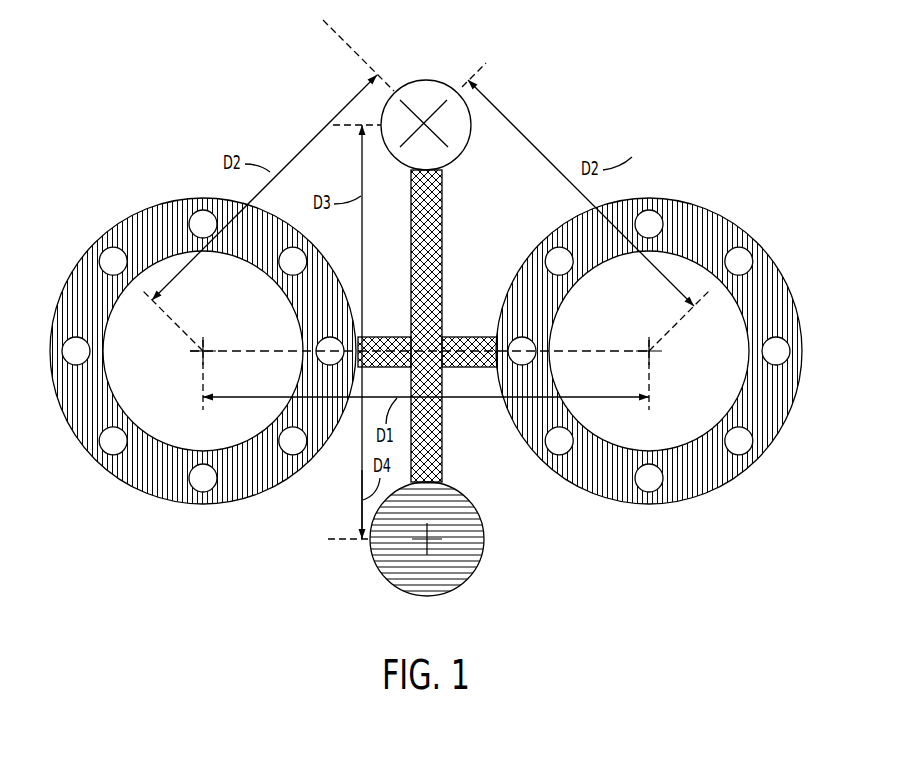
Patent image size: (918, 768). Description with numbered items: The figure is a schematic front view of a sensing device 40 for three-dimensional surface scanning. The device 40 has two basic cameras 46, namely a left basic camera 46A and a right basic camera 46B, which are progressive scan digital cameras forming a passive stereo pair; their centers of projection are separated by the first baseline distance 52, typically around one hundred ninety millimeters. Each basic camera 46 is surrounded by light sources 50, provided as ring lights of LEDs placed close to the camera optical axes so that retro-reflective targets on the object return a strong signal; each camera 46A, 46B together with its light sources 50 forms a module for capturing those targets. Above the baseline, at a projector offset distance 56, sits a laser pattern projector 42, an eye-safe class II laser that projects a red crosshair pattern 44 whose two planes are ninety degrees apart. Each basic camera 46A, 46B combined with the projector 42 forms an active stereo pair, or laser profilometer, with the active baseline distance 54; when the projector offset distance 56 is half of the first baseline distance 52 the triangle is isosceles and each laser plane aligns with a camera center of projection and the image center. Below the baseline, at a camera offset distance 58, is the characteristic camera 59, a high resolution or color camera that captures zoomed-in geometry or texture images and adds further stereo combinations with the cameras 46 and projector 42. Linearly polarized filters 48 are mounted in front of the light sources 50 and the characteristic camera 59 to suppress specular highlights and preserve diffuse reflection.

The sensing device 40 is at (585, 108).
The laser pattern projector 42 is at (426, 80).
The crosshair pattern 44 is at (206, 347).
The basic cameras 46 is at (423, 365).
The left basic camera 46A is at (148, 396).
The right basic camera 46B is at (594, 410).
The linearly polarized filters 48 is at (253, 484).
The light sources 50 is at (115, 258).
The baseline D1 52 is at (512, 398).
The baseline D2 54 is at (316, 127).
The distance D3 56 is at (361, 166).
The distance D4 58 is at (361, 478).
The characteristic camera 59 is at (476, 573).